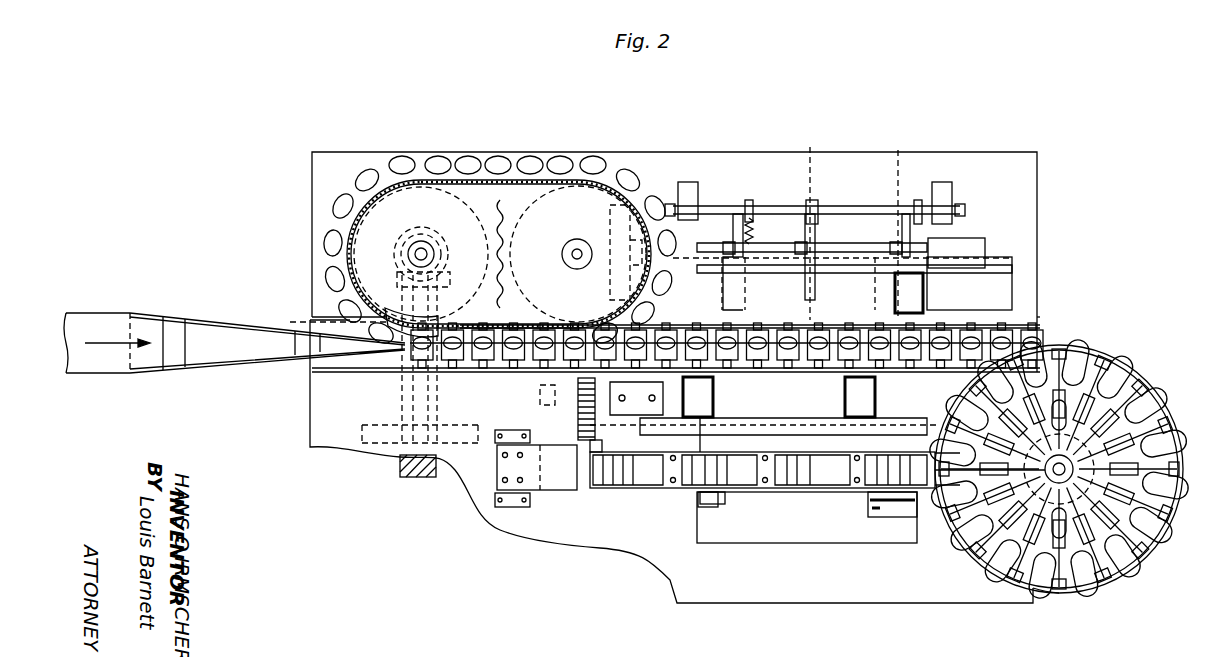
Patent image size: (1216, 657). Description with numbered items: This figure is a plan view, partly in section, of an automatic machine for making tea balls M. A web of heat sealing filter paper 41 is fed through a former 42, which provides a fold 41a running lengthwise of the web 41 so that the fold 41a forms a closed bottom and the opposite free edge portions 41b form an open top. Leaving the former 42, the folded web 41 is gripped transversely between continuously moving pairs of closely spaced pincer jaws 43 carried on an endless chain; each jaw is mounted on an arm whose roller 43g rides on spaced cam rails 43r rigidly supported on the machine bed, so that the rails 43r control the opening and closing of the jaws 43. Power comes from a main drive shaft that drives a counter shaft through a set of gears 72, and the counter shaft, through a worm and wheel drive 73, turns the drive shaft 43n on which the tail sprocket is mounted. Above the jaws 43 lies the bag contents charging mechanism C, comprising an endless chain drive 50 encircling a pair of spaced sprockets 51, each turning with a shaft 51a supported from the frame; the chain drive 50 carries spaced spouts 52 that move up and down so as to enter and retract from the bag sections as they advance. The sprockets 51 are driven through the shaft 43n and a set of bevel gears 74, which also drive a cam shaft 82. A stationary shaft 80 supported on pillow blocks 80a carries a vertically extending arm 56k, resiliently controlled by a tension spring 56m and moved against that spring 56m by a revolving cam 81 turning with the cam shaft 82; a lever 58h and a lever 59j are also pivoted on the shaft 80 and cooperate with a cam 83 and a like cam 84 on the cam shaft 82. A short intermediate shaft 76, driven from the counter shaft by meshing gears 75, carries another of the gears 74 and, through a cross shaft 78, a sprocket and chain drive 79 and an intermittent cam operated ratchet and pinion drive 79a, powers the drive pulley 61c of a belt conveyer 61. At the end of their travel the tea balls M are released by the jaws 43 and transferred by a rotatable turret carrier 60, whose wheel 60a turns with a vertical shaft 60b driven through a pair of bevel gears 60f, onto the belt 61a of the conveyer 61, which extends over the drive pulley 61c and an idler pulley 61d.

The bag contents charging mechanism C is at (492, 140).
The web of heat sealing filter paper 41 is at (97, 360).
The fold 41a is at (330, 345).
The free longitudinally extending edge portions 41b is at (262, 325).
The former 42 is at (235, 368).
The pincer jaws 43 is at (505, 352).
The cam rails 43r is at (775, 325).
The roller 43g is at (830, 325).
The drive shaft 43n is at (416, 478).
The endless chain drive 50 is at (515, 180).
The sprockets 51 is at (421, 195).
The shaft 51a is at (423, 252).
The spouts or funnel members 52 is at (393, 160).
The vertically extending arm 56k is at (750, 200).
The tension spring 56m is at (753, 235).
The lever 58h is at (813, 200).
The lever 59j is at (918, 198).
The rotatable turret carrier 60 is at (1128, 574).
The wheel 60a is at (1082, 592).
The vertical shaft 60b is at (1065, 478).
The bevel gears 60f is at (1057, 469).
The belt conveyer 61 is at (602, 492).
The belt 61a is at (580, 490).
The drive pulley 61c is at (975, 508).
The idler pulley 61d is at (570, 448).
The set of gears 72 is at (545, 388).
The worm and wheel drive 73 is at (378, 445).
The bevel gears 74 is at (440, 272).
The meshing gears 75 is at (593, 472).
The short intermediate shaft 76 is at (522, 428).
The cross shaft 78 is at (708, 440).
The sprocket and chain drive 79 is at (737, 490).
The intermittent cam operated ratchet and pinion drive 79a is at (882, 508).
The stationary shaft 80 is at (962, 210).
The pillow blocks 80a is at (980, 170).
The revolving cam 81 is at (740, 232).
The cam shaft 82 is at (855, 262).
The cam 83 is at (817, 222).
The cam 84 is at (895, 223).
The tea balls M is at (650, 472).